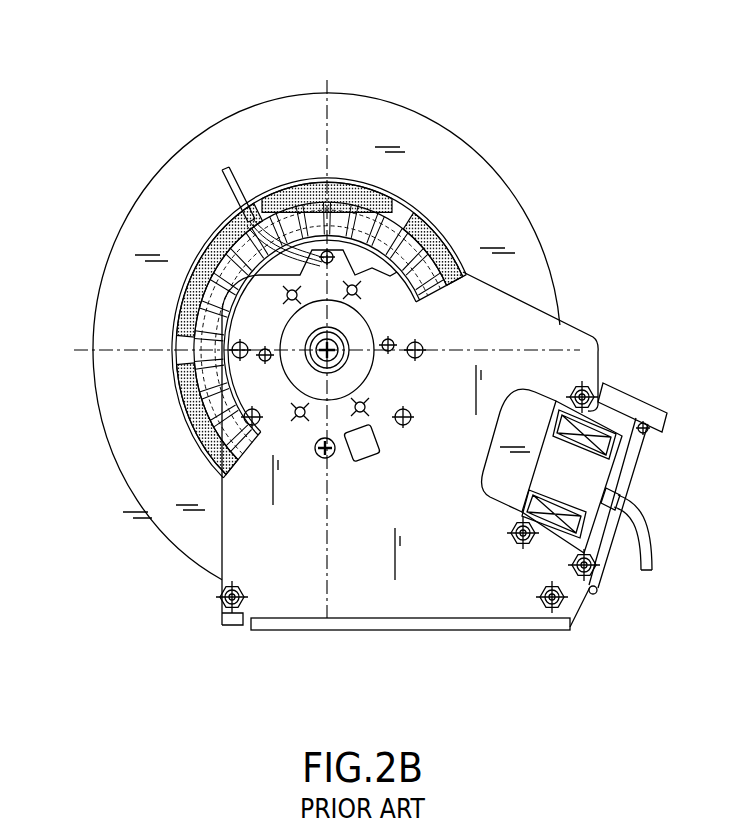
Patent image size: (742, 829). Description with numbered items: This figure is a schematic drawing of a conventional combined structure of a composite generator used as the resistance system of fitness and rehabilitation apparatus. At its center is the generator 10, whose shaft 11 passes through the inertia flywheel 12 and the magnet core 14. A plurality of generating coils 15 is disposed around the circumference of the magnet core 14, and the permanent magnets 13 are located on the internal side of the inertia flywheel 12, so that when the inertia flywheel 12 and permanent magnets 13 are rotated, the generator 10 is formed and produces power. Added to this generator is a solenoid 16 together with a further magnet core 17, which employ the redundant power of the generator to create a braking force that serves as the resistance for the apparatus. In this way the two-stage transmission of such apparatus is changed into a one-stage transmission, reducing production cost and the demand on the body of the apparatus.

The generator 10 is at (138, 550).
The shaft 11 is at (350, 341).
The inertia flywheel 12 is at (442, 146).
The permanent magnets 13 is at (450, 236).
The magnet core 14 is at (338, 232).
The generating coils 15 is at (200, 256).
The solenoid 16 is at (610, 440).
The magnet core 17 is at (597, 480).